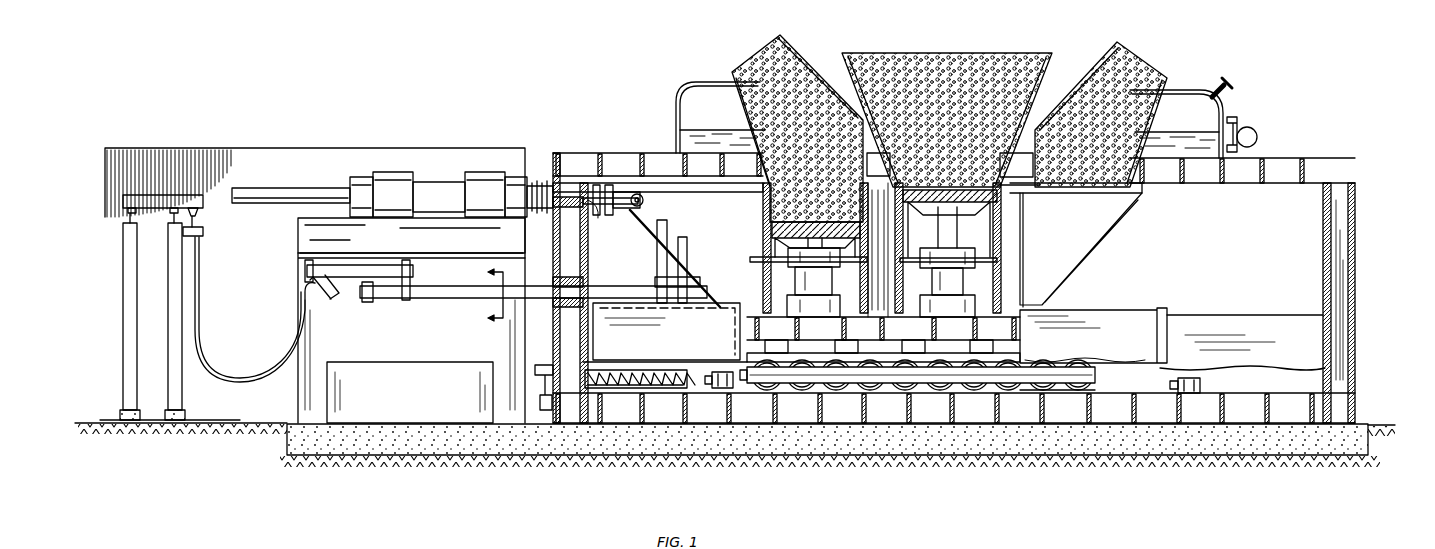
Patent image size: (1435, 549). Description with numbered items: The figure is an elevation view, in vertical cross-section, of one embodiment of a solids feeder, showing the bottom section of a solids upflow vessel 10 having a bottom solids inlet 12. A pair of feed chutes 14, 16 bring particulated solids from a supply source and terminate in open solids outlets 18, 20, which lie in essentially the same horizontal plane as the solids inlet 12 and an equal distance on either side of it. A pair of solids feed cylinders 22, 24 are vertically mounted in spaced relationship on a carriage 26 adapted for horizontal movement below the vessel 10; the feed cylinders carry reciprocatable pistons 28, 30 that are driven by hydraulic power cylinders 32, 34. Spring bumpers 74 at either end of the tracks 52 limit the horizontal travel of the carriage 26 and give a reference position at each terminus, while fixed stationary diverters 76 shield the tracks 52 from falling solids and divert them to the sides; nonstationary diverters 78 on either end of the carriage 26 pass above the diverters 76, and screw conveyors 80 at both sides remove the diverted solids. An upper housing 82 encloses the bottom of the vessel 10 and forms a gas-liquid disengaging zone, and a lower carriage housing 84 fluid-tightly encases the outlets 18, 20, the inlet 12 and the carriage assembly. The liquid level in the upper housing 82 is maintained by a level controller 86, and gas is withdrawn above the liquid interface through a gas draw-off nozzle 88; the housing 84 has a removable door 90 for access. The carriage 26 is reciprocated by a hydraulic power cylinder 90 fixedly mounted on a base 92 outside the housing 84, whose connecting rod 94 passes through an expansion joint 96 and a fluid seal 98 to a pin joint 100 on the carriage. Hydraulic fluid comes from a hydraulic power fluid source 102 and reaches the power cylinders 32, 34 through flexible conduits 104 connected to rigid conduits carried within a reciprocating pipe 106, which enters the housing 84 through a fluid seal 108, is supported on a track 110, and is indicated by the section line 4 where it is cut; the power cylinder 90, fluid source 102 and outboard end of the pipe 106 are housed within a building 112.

The solids upflow vessel 10 is at (1038, 60).
The bottom solids inlet 12 is at (1003, 182).
The feed chute 14 is at (800, 60).
The feed chute 16 is at (1093, 58).
The solids outlet 18 is at (760, 130).
The solids outlet 20 is at (1143, 130).
The solids feed cylinder 22 is at (767, 211).
The solids feed cylinder 24 is at (1020, 231).
The carriage 26 is at (1027, 347).
The reciprocatable piston 28 is at (780, 240).
The reciprocatable piston 30 is at (1030, 202).
The hydraulic power cylinder 32 is at (802, 283).
The hydraulic power cylinder 34 is at (950, 282).
The tracks 52 is at (1112, 393).
The spring bumper 74 is at (720, 368).
The stationary diverter 76 is at (677, 360).
The nonstationary diverter 78 is at (627, 315).
The screw conveyor 80 is at (630, 373).
The upper housing 82 is at (678, 102).
The lower carriage housing 84 is at (1297, 157).
The level controller 86 is at (1258, 127).
The gas draw-off nozzle 88 is at (1228, 87).
The hydraulic power cylinder 90 is at (435, 190).
The base 92 is at (305, 237).
The connecting rod 94 is at (315, 193).
The expansion joint 96 is at (533, 180).
The fluid seal 98 is at (588, 212).
The pin joint 100 is at (647, 200).
The hydraulic power fluid source 102 is at (360, 362).
The flexible conduit 104 is at (202, 343).
The reciprocating pipe 106 is at (455, 292).
The fluid seal 108 is at (592, 282).
The track 110 is at (377, 250).
The building 112 is at (280, 157).
The section line 4 is at (404, 294).